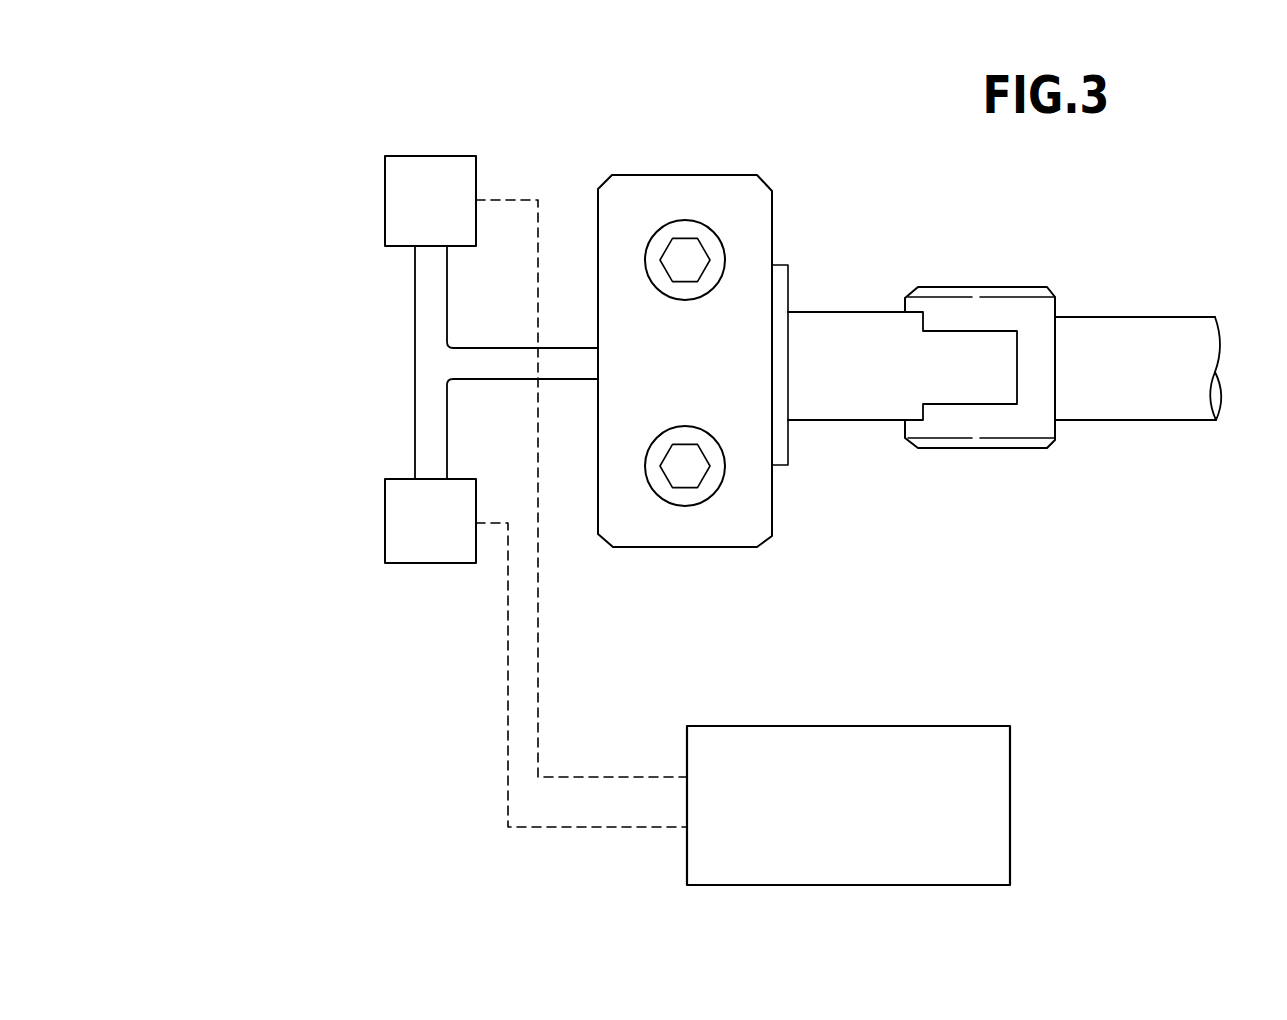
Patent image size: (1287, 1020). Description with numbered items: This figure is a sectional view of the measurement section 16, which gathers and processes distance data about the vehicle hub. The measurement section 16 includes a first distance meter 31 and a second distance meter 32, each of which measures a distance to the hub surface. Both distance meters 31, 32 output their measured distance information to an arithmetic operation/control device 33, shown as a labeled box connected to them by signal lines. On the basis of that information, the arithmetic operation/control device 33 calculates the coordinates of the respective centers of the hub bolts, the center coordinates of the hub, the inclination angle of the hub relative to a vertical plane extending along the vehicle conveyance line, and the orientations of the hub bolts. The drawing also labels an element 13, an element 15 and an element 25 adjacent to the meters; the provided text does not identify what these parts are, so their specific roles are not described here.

The pipe 13 is at (1127, 326).
The fixing bolt 15 is at (690, 227).
The measurement section 16 is at (320, 194).
The coupling nut 25 is at (992, 290).
The first distance meter 31 is at (432, 165).
The second distance meter 32 is at (397, 523).
The arithmetic operation/control device 33 is at (995, 800).